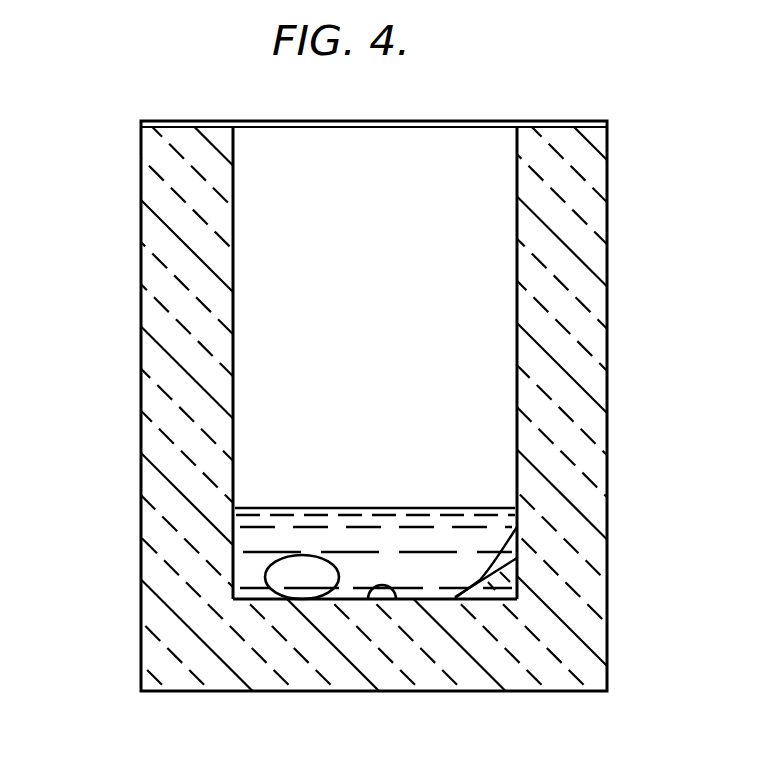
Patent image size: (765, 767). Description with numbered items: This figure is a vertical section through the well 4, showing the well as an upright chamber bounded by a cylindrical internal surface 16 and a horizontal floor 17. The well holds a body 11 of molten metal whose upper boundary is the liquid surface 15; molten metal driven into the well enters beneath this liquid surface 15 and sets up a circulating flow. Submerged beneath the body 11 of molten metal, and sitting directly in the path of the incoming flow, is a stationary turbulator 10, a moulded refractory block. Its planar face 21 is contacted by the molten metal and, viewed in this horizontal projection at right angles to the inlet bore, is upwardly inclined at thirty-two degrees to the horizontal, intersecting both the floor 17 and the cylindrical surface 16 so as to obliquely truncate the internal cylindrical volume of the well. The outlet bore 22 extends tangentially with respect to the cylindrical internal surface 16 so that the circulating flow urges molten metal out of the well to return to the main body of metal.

The well 4 is at (607, 297).
The cylindrical internal surface 16 is at (514, 216).
The turbulator 10 is at (488, 573).
The liquid surface 15 is at (297, 508).
The body of molten metal 11 is at (250, 541).
The outlet bore 22 is at (270, 573).
The planar face 21 is at (517, 527).
The floor 17 is at (397, 603).